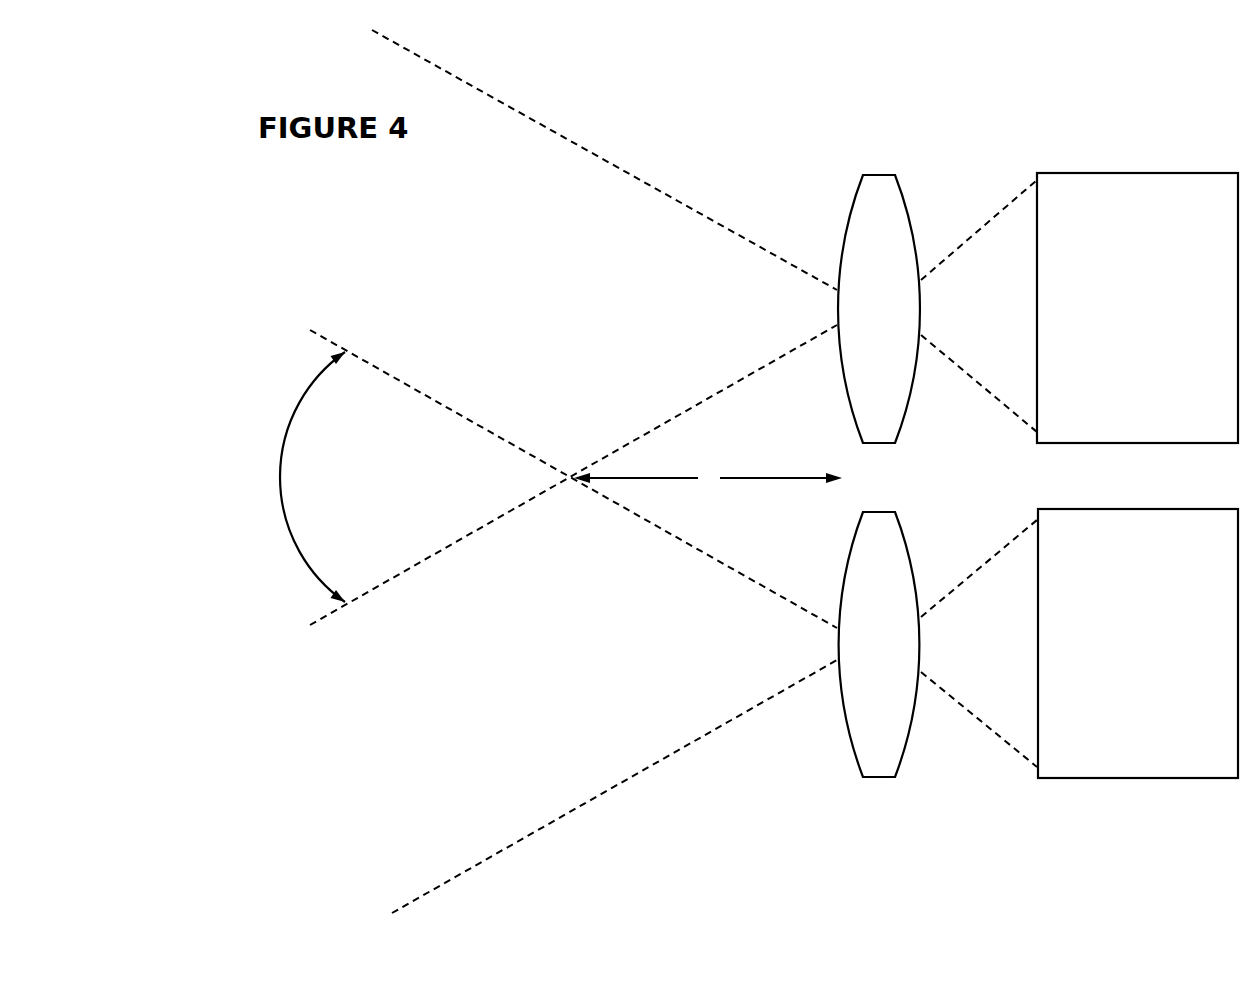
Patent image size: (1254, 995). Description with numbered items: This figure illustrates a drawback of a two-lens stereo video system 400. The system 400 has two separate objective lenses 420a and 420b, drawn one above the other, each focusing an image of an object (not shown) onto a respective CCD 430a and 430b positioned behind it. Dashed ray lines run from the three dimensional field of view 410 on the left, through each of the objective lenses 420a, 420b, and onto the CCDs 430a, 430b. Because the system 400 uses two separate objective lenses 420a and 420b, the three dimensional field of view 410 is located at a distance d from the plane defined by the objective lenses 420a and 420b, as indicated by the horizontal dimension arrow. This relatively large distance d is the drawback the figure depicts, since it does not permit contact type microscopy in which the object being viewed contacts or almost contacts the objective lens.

The system 400 is at (353, 191).
The three dimensional field of view 410 is at (449, 496).
The objective lens 420a is at (937, 266).
The objective lens 420b is at (938, 677).
The CCD 430a is at (1231, 429).
The CCD 430b is at (1230, 764).